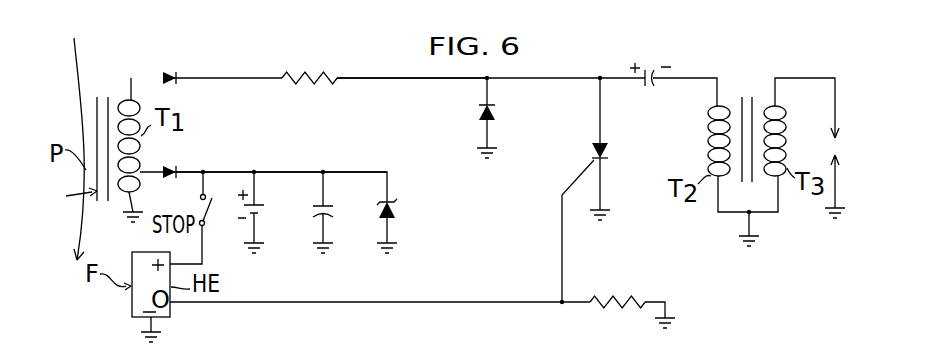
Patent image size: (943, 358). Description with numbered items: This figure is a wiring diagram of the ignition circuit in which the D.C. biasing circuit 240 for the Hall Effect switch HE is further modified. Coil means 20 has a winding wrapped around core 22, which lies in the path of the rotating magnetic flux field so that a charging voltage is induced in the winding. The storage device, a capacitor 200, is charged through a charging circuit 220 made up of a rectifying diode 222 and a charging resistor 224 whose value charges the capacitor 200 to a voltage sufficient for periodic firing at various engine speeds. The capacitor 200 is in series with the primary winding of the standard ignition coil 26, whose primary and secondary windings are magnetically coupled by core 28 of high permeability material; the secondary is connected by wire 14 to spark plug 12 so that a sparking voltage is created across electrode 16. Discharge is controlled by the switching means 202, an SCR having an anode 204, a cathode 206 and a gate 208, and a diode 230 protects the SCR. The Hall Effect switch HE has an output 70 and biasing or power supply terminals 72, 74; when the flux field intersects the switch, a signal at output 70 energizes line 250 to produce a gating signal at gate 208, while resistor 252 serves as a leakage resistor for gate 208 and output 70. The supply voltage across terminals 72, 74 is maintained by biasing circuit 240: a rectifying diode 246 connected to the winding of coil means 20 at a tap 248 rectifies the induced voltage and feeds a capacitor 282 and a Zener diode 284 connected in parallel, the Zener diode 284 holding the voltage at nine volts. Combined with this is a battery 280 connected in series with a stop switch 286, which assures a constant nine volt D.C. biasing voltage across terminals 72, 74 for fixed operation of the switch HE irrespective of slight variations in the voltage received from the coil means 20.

The spark plug 12 is at (838, 144).
The wire 14 is at (838, 106).
The electrode 16 is at (841, 155).
The coil means 20 is at (67, 197).
The core 22 is at (108, 97).
The ignition coil 26 is at (761, 75).
The magnetic coupling core 28 is at (752, 212).
The output 70 is at (205, 304).
The biasing or power supply terminal 72 is at (170, 262).
The biasing or power supply terminal 74 is at (147, 323).
The storage device 200 is at (654, 70).
The switching means 202 is at (617, 156).
The anode 204 is at (603, 118).
The cathode 206 is at (603, 184).
The gate 208 is at (563, 230).
The charging circuit 220 is at (358, 64).
The rectifying diode 222 is at (170, 71).
The charging resistor 224 is at (290, 72).
The diode 230 is at (495, 115).
The biasing circuit 240 is at (360, 165).
The rectifying diode 246 is at (171, 166).
The tap 248 is at (151, 206).
The line 250 is at (508, 304).
The leakage resistor 252 is at (616, 304).
The battery 280 is at (260, 202).
The filter capacitor 282 is at (330, 212).
The Zener diode 284 is at (392, 203).
The stop switch 286 is at (248, 263).